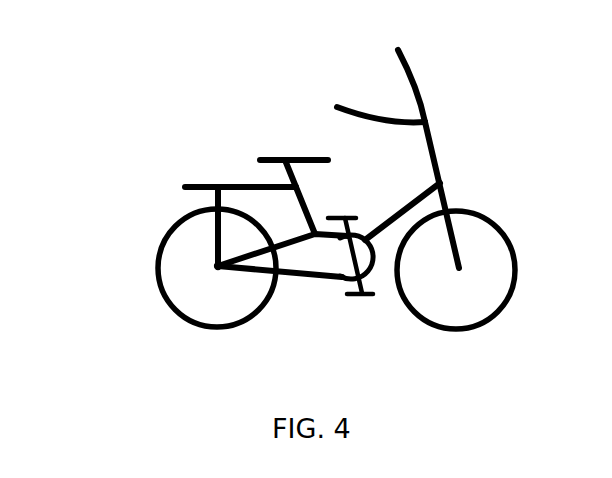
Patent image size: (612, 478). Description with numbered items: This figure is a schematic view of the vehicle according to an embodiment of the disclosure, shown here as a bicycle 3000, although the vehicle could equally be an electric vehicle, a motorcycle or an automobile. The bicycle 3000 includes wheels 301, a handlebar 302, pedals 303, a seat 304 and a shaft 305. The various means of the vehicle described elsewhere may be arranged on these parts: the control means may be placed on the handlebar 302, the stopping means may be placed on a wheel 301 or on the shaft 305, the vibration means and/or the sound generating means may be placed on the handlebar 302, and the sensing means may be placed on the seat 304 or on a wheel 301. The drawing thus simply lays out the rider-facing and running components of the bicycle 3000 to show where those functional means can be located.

The bicycle 3000 is at (157, 117).
The wheels 301 is at (154, 282).
The handlebar 302 is at (427, 120).
The pedals 303 is at (352, 263).
The seat 304 is at (283, 153).
The shaft 305 is at (213, 272).